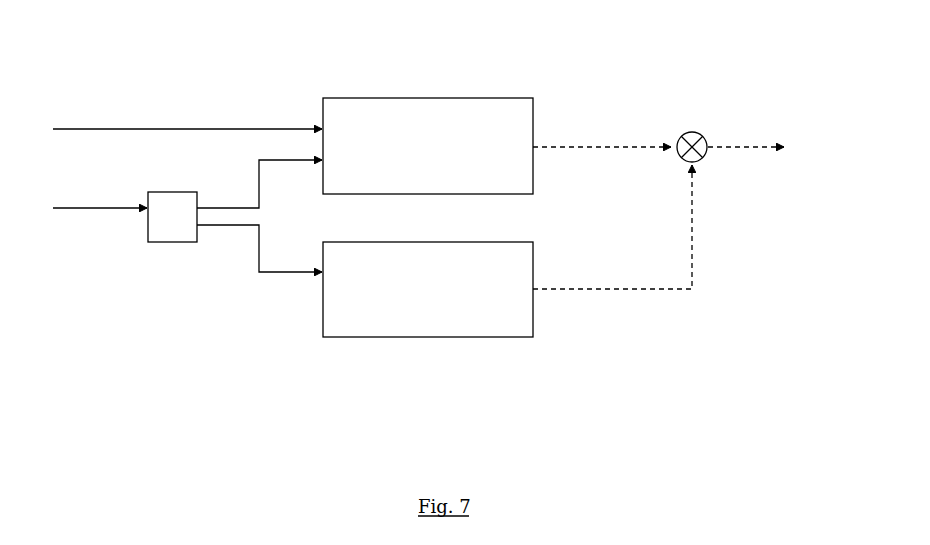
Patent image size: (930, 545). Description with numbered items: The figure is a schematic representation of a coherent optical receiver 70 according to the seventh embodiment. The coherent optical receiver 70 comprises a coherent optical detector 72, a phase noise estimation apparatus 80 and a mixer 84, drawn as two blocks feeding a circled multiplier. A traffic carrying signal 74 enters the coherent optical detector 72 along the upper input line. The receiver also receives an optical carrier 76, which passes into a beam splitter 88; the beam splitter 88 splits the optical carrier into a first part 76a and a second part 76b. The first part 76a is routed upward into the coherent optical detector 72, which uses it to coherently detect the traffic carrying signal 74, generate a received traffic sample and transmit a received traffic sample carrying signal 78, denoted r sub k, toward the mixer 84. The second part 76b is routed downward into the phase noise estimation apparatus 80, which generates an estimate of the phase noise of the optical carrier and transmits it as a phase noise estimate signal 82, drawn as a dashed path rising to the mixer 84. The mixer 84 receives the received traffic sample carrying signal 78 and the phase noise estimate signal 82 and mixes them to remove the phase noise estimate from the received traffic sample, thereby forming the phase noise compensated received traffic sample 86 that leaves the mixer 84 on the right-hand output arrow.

The coherent optical receiver 70 is at (571, 39).
The coherent optical detector 72 is at (392, 114).
The traffic carrying signal 74 is at (152, 128).
The optical carrier 76 is at (88, 212).
The first part of the optical carrier 76a is at (259, 188).
The second part of the optical carrier 76b is at (268, 282).
The received traffic sample carrying signal 78 is at (588, 145).
The phase noise estimation apparatus 80 is at (469, 322).
The phase noise estimate signal 82 is at (598, 292).
The mixer 84 is at (697, 133).
The phase noise compensated received traffic sample 86 is at (747, 150).
The beam splitter 88 is at (169, 232).